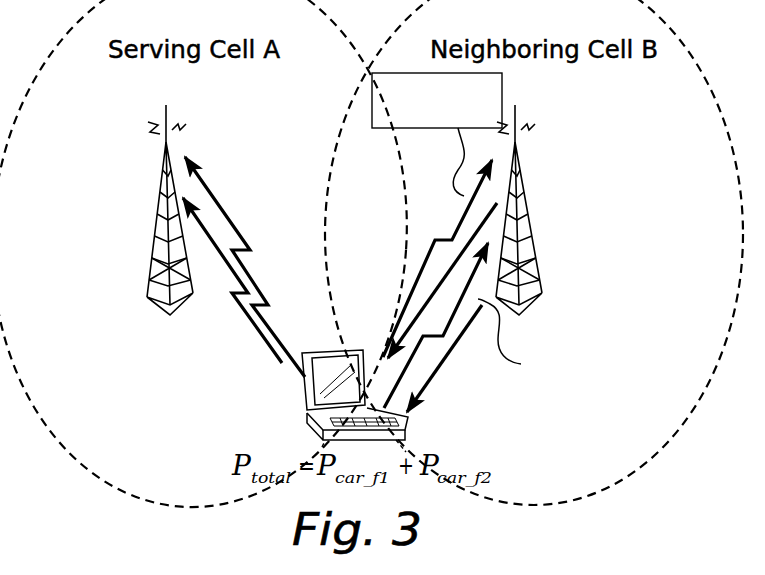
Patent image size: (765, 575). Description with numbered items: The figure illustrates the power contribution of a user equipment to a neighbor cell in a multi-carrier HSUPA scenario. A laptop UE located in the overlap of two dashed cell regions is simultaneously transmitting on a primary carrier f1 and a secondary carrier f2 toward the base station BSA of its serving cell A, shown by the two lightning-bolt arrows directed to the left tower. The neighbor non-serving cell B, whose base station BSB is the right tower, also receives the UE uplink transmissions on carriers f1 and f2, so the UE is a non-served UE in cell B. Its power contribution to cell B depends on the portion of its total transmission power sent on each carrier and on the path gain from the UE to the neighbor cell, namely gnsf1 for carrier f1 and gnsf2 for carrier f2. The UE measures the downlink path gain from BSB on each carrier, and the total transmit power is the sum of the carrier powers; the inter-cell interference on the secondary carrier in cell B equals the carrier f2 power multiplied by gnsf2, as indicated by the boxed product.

The base station A BSA is at (151, 246).
The base station B BSB is at (537, 249).
The element UE is at (307, 407).
The primary carrier f1 is at (232, 280).
The secondary carrier f2 is at (245, 267).
The path gain on carrier f1 gnsf1 is at (446, 360).
The path gain on carrier f2 gnsf2 is at (442, 275).